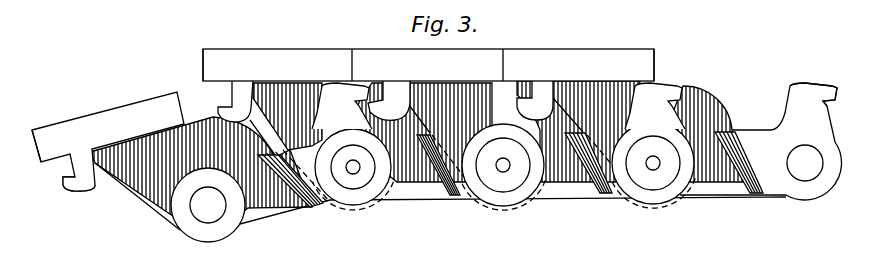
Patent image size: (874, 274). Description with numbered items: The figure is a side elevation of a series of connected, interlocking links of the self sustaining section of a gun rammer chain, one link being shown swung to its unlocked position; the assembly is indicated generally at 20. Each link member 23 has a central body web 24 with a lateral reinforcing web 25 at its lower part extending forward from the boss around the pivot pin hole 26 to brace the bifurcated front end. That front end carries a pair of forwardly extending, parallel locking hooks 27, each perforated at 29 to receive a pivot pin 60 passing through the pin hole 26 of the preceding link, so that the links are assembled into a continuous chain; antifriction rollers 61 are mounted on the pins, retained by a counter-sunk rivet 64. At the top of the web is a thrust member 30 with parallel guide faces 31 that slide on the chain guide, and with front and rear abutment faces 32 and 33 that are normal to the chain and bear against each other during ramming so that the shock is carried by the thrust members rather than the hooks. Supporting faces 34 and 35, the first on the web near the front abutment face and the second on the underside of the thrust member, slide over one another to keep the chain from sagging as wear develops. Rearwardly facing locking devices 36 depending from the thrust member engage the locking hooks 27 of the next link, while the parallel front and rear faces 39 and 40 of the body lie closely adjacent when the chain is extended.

The conveyor chain assembly 20 is at (7, 265).
The link member 23 is at (224, 242).
The body web 24 is at (155, 201).
The reinforcing web 25 is at (281, 214).
The pivot pin hole 26 is at (205, 218).
The locking hooks 27 is at (343, 91).
The perforation 29 is at (800, 172).
The thrust member 30 is at (322, 110).
The guide faces 31 is at (293, 58).
The front abutment face 32 is at (656, 56).
The rear abutment face 33 is at (203, 58).
The supporting face 34 is at (192, 110).
The supporting face 35 is at (52, 165).
The locking devices 36 is at (84, 192).
The front face 39 is at (725, 124).
The rear face 40 is at (140, 199).
The pivot pin 60 is at (496, 183).
The antifriction roller 61 is at (656, 190).
The counter-sunk rivet 64 is at (354, 173).